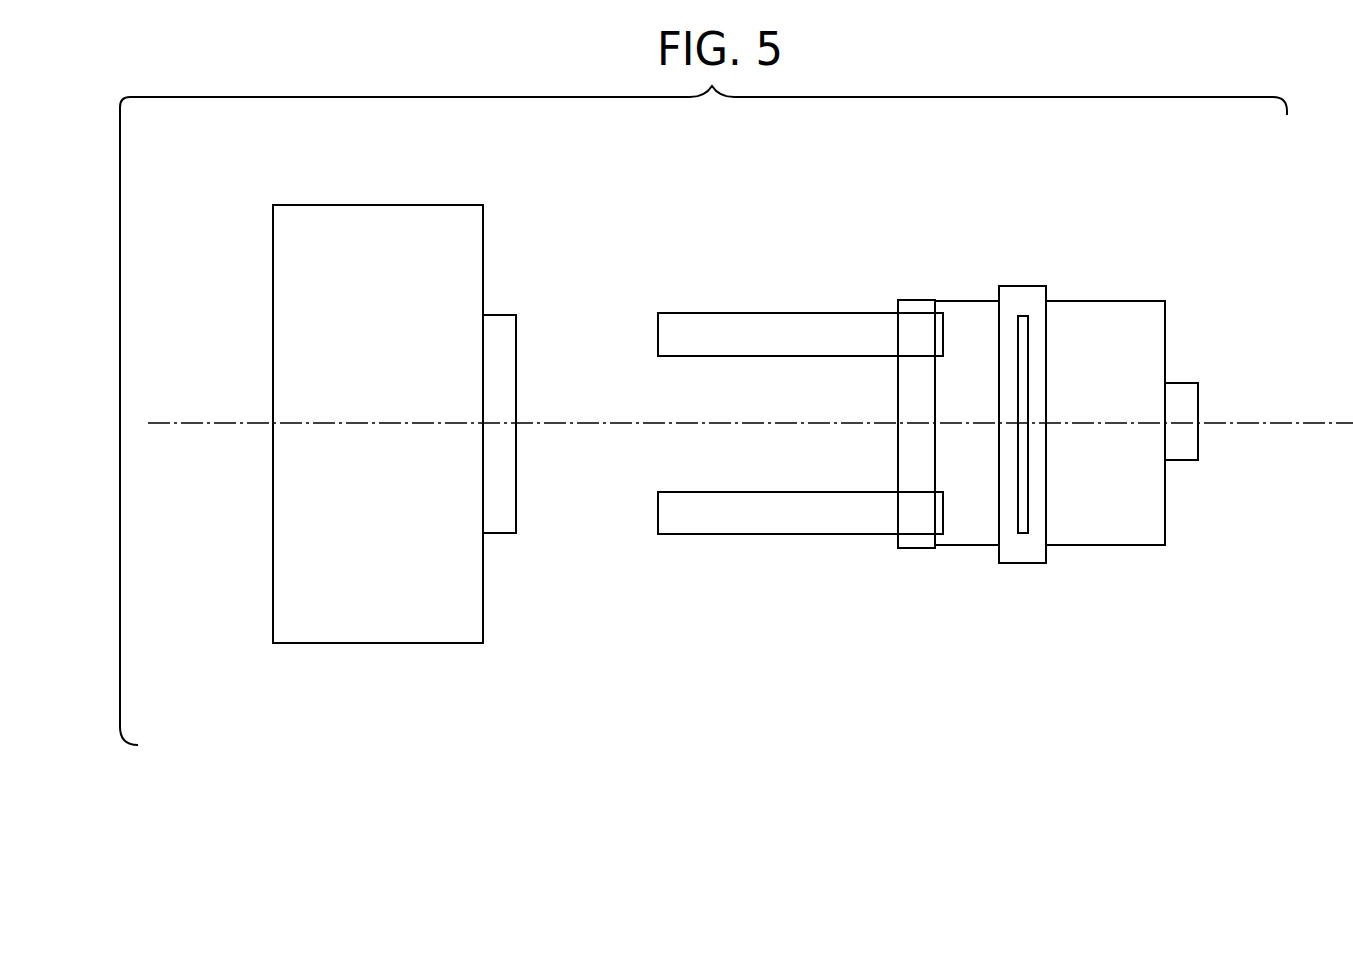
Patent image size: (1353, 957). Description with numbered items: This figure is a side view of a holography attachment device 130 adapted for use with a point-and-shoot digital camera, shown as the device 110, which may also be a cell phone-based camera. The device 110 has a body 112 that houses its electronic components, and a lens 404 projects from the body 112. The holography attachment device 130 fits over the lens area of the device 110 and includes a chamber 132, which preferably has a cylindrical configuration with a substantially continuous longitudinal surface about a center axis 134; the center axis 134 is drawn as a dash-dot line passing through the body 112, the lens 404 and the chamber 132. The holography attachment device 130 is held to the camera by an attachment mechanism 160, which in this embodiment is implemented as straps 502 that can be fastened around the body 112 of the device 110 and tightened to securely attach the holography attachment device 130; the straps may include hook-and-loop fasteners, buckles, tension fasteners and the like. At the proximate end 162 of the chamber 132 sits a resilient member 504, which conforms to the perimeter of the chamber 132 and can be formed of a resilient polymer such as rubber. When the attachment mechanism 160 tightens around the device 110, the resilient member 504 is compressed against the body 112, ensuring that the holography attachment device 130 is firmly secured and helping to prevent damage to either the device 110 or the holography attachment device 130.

The digital imaging device 110 is at (374, 392).
The body 112 is at (377, 220).
The lens 404 is at (530, 312).
The center axis 134 is at (192, 427).
The proximate end 162 is at (800, 388).
The straps 502 is at (703, 500).
The resilient member 504 is at (914, 307).
The attachment mechanism 160 is at (823, 483).
The holography attachment device 130 is at (1066, 381).
The chamber 132 is at (1140, 308).